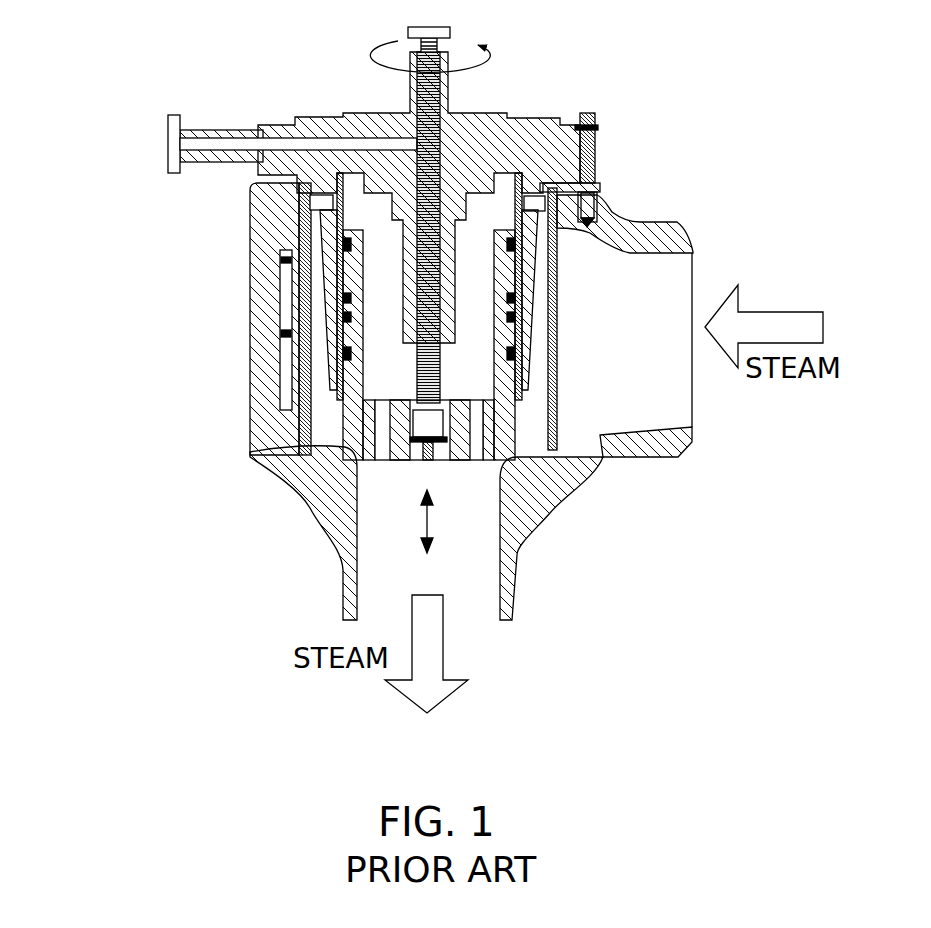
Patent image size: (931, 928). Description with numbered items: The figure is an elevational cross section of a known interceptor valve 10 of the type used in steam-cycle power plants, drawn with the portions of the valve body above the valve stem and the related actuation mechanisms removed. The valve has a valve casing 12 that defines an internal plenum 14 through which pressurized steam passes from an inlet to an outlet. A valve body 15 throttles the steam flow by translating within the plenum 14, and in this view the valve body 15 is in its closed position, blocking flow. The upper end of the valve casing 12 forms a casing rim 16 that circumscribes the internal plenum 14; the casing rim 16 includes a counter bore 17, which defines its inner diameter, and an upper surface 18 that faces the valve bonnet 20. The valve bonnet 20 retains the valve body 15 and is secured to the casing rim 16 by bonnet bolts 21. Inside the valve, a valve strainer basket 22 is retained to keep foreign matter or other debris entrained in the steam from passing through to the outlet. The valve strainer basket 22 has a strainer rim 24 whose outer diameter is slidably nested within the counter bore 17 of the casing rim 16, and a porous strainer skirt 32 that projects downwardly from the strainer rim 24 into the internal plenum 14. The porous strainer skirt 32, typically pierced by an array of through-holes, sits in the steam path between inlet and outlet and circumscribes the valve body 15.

The interceptor valve 10 is at (692, 155).
The valve casing 12 is at (249, 469).
The internal plenum 14 is at (587, 302).
The valve body 15 is at (332, 411).
The casing rim 16 is at (246, 188).
The counter bore 17 is at (543, 171).
The upper surface 18 is at (173, 172).
The valve bonnet 20 is at (253, 122).
The bonnet bolts 21 is at (607, 127).
The valve strainer basket 22 is at (296, 399).
The strainer rim 24 is at (300, 185).
The porous strainer skirt 32 is at (549, 402).